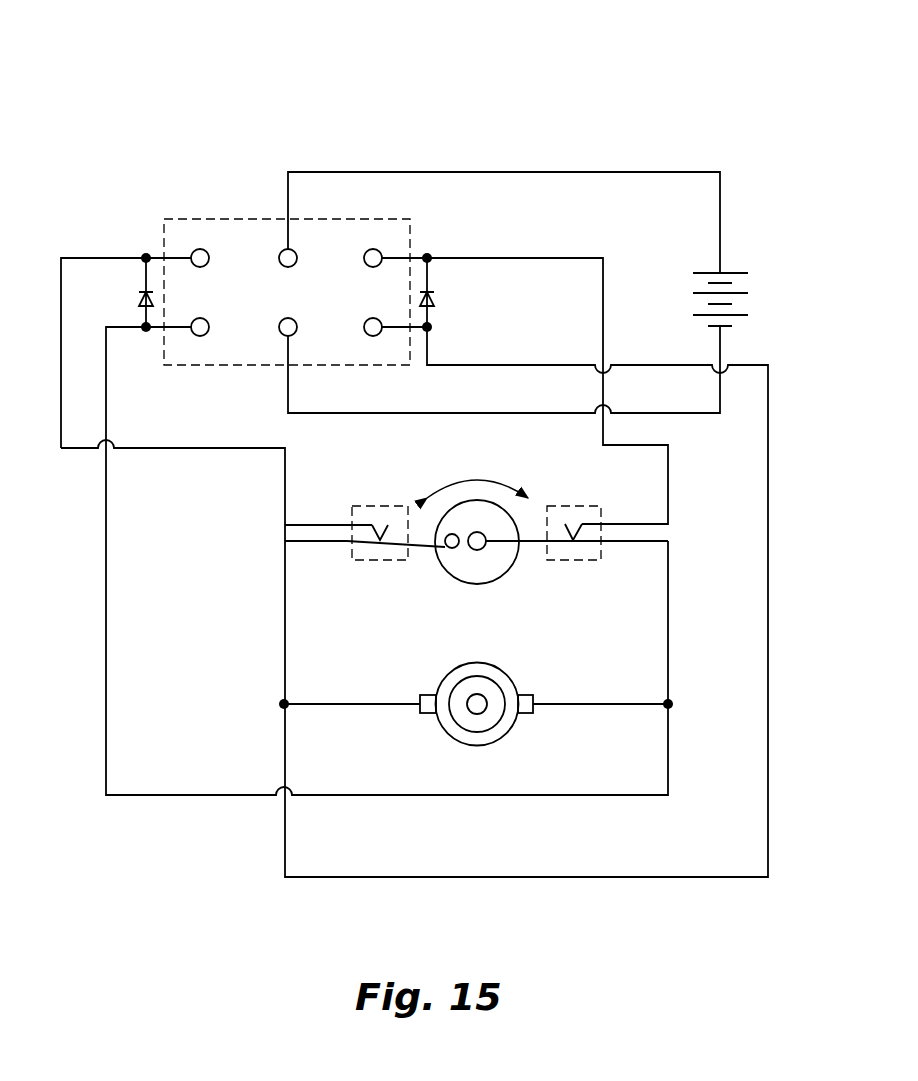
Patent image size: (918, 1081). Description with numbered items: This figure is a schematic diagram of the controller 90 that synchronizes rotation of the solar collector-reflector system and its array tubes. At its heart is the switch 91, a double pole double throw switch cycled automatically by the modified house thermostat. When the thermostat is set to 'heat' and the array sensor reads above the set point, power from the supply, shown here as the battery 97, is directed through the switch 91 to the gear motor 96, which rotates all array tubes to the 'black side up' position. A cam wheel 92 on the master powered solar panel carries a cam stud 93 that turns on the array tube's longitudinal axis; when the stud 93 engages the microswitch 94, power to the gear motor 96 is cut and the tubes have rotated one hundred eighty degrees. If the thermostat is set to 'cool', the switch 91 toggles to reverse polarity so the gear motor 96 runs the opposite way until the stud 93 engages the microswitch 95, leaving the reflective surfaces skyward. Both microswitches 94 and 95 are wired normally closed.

The controller 90 is at (680, 76).
The switch 91 is at (204, 218).
The cam wheel 92 is at (515, 562).
The cam stud 93 is at (453, 534).
The microswitch 94 is at (366, 505).
The microswitch 95 is at (602, 516).
The gear motor 96 is at (512, 677).
The battery 97 is at (752, 250).